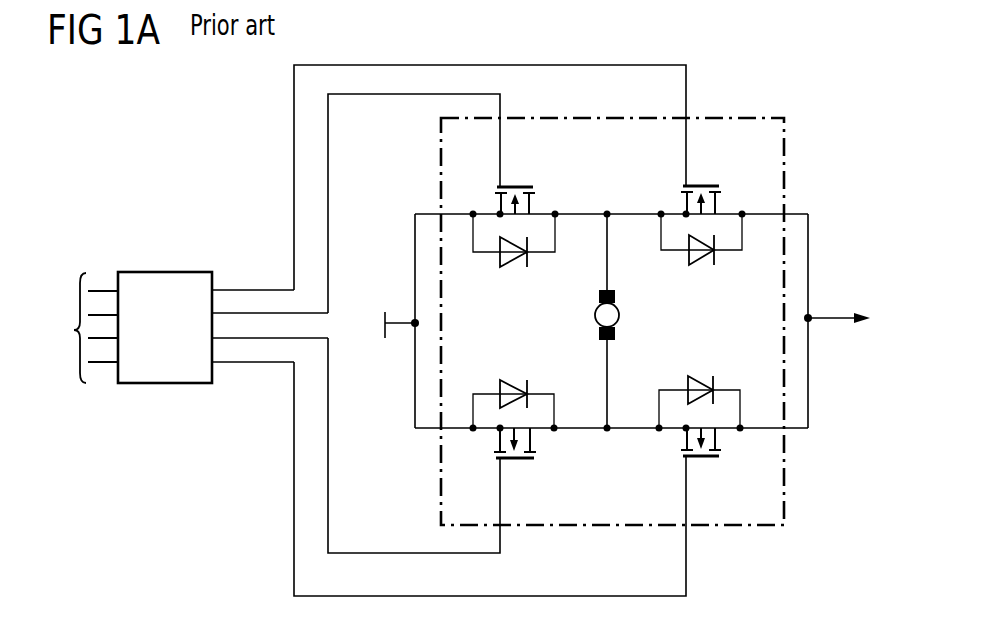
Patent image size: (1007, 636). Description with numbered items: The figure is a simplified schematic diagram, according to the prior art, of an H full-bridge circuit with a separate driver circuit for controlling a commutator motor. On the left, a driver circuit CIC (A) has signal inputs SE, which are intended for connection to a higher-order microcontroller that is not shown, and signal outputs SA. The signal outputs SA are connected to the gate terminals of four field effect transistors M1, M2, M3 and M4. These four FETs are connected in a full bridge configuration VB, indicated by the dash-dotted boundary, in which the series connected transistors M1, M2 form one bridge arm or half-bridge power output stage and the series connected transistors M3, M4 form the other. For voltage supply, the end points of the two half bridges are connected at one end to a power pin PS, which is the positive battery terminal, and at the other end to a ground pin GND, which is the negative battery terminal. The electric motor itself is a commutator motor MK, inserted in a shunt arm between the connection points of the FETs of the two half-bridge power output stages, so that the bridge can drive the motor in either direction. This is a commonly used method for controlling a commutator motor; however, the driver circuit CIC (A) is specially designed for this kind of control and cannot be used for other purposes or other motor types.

The driver circuit CIC is at (165, 327).
The signal inputs SE is at (80, 328).
The signal outputs SA is at (260, 313).
The ground pin GND is at (375, 327).
The full bridge configuration VB is at (785, 167).
The field effect transistor M1 is at (543, 192).
The field effect transistor M2 is at (728, 190).
The field effect transistor M3 is at (540, 376).
The field effect transistor M4 is at (733, 372).
The commutator motor MK is at (620, 314).
The power pin PS is at (837, 304).